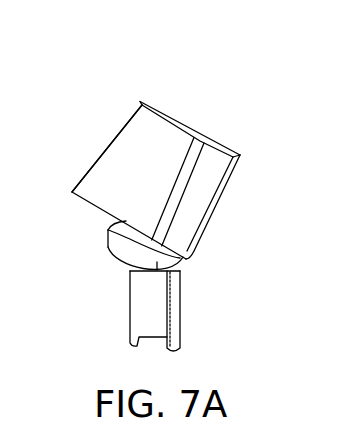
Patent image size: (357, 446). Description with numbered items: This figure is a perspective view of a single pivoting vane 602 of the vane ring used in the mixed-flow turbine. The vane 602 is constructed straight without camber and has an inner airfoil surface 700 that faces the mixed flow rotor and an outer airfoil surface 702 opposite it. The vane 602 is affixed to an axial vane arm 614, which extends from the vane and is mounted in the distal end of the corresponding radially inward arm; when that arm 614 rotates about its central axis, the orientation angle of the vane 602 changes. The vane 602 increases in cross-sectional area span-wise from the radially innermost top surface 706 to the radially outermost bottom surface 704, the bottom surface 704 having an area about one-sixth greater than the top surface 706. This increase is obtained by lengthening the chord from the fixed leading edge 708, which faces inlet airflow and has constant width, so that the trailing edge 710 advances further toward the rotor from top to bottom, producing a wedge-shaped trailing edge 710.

The inner airfoil surface 700 is at (170, 110).
The outer airfoil surface 702 is at (85, 198).
The bottom surface 704 is at (107, 241).
The top surface 706 is at (213, 138).
The leading edge 708 is at (226, 182).
The trailing edge 710 is at (103, 148).
The vane 602 is at (235, 247).
The axial vane arm 614 is at (173, 303).